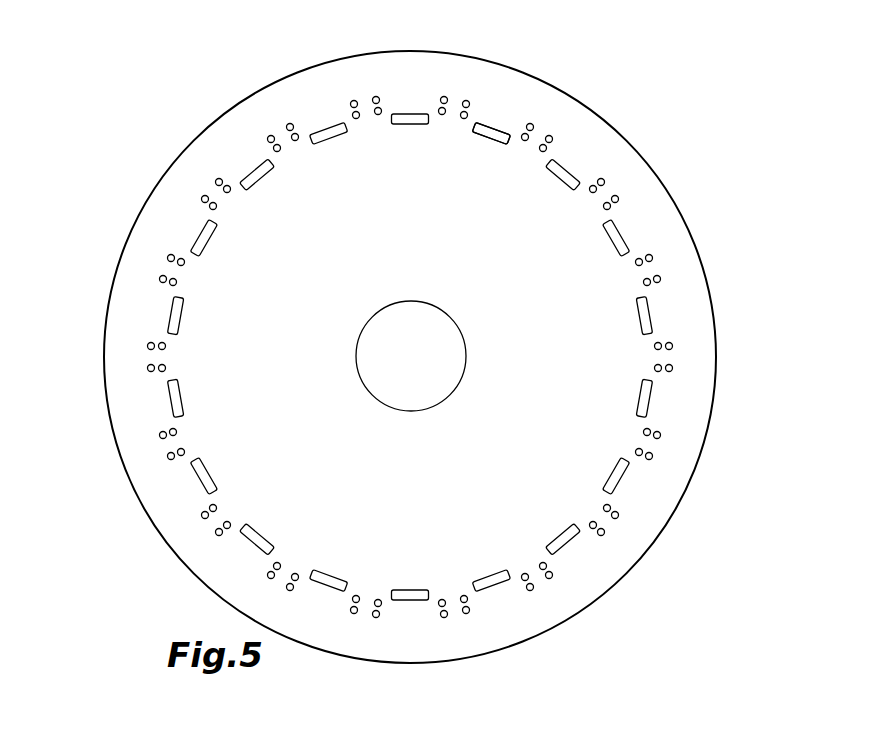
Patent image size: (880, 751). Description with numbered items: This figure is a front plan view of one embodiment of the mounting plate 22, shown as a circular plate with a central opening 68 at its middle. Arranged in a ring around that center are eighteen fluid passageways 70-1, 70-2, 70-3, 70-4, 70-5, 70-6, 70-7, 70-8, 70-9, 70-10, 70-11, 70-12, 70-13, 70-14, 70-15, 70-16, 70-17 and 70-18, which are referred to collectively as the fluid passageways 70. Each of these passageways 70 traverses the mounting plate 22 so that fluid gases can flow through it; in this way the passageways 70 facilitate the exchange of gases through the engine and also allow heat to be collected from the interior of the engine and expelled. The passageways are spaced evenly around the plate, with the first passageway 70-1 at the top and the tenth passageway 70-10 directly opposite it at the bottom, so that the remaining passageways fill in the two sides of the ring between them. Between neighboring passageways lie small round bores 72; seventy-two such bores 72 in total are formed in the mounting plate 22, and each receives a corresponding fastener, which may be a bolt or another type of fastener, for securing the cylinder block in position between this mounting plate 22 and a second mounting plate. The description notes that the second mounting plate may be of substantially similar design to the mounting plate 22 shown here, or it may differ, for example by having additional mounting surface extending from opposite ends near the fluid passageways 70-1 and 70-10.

The mounting plate 22 is at (670, 151).
The central hub opening 68 is at (452, 318).
The fluid passageways 70 is at (512, 129).
The fluid passageway 70-1 is at (408, 113).
The fluid passageway 70-2 is at (498, 128).
The fluid passageway 70-3 is at (574, 170).
The fluid passageway 70-4 is at (622, 232).
The fluid passageway 70-5 is at (649, 316).
The fluid passageway 70-6 is at (651, 399).
The fluid passageway 70-7 is at (621, 480).
The fluid passageway 70-8 is at (569, 545).
The fluid passageway 70-9 is at (496, 584).
The fluid passageway 70-10 is at (410, 601).
The fluid passageway 70-11 is at (327, 590).
The fluid passageway 70-12 is at (258, 548).
The fluid passageway 70-13 is at (205, 486).
The fluid passageway 70-14 is at (172, 400).
The fluid passageway 70-15 is at (172, 318).
The fluid passageway 70-16 is at (197, 238).
The fluid passageway 70-17 is at (250, 170).
The fluid passageway 70-18 is at (321, 128).
The bores 72 is at (462, 121).